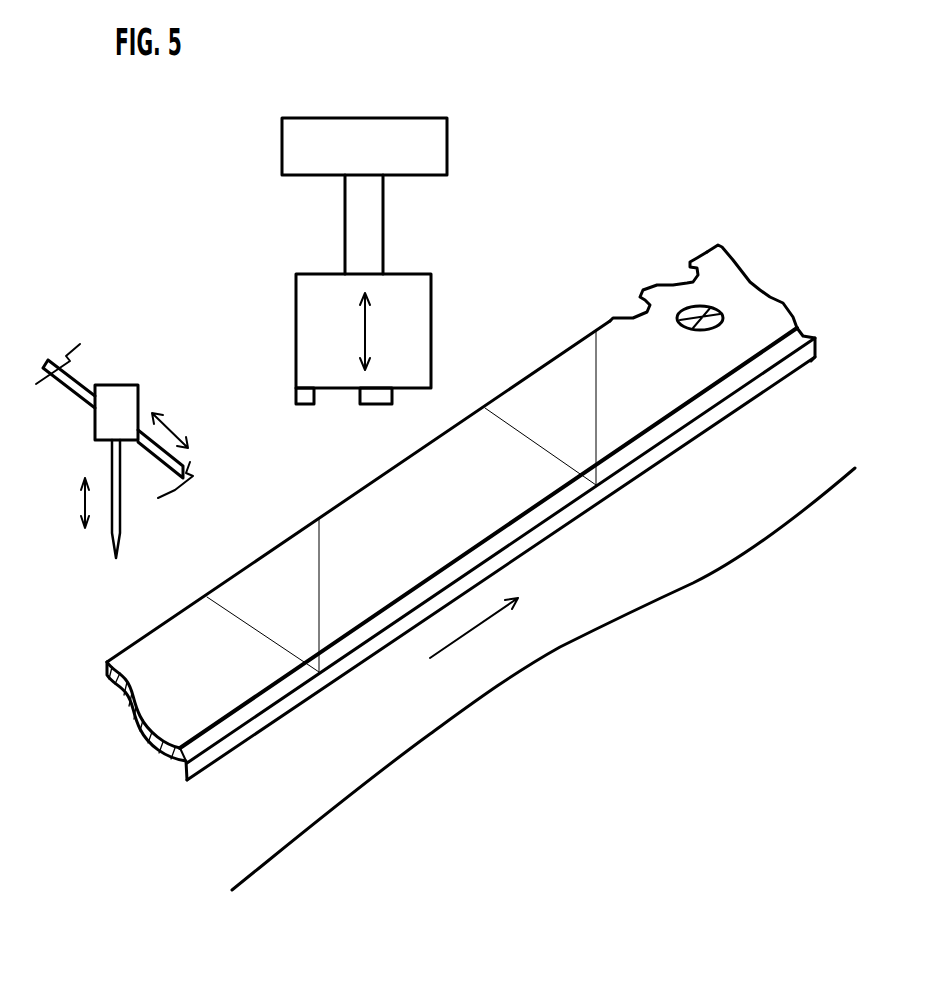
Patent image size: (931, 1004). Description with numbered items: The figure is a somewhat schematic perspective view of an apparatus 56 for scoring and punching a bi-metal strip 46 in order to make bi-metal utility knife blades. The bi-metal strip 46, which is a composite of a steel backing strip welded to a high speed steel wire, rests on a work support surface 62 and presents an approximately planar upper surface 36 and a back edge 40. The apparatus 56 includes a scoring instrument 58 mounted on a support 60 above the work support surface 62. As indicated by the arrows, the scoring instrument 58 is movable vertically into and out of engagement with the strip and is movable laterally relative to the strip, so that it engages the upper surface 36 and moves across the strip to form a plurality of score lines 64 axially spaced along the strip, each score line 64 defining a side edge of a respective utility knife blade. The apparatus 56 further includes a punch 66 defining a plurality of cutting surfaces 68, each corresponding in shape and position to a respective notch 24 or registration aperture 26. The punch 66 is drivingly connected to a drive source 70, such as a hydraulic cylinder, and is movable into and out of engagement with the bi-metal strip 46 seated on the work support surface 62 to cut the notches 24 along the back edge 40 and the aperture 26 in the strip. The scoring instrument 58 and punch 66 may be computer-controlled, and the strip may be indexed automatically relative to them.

The notches 24 is at (640, 315).
The registration aperture 26 is at (718, 318).
The upper side 36 is at (167, 652).
The back edge 40 is at (461, 501).
The bi-metal strip 46 is at (735, 254).
The apparatus 56 is at (374, 274).
The scoring instrument 58 is at (112, 478).
The support 60 is at (82, 378).
The work support surface 62 is at (241, 826).
The score lines 64 is at (319, 563).
The punch 66 is at (318, 272).
The cutting surfaces 68 is at (375, 404).
The drive source 70 is at (282, 138).